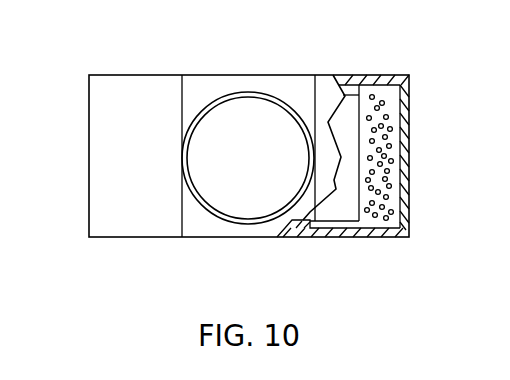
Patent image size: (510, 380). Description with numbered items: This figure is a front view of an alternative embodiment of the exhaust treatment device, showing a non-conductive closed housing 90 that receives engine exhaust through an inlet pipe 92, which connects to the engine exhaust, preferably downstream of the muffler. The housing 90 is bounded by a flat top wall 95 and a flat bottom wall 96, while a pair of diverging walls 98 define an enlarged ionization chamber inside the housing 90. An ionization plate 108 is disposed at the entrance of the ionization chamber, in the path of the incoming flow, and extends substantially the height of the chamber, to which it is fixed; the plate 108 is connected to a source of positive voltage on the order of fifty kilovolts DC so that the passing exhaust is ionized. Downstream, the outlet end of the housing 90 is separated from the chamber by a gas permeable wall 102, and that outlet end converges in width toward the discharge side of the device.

The closed housing 90 is at (409, 123).
The inlet pipe 92 is at (227, 222).
The top wall 95 is at (379, 83).
The bottom wall 96 is at (355, 238).
The diverging walls 98 is at (98, 162).
The gas permeable wall 102 is at (395, 169).
The ionization plate 108 is at (316, 115).